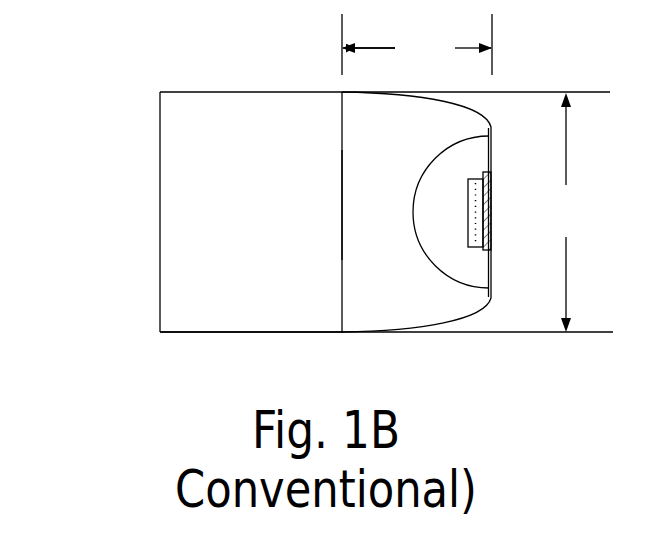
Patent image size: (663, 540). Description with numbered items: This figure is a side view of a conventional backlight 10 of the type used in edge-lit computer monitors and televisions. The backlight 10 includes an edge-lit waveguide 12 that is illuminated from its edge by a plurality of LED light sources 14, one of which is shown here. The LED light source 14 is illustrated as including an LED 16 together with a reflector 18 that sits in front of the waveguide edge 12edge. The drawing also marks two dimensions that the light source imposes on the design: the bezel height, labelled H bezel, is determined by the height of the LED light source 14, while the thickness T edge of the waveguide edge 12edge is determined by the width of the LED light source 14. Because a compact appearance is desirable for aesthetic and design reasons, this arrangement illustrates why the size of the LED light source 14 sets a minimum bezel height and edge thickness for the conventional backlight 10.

The conventional backlight 10 is at (118, 70).
The edge-lit waveguide 12 is at (188, 92).
The waveguide edge 12edge is at (342, 203).
The LED light source 14 is at (520, 67).
The LED 16 is at (468, 243).
The reflector 18 is at (348, 333).